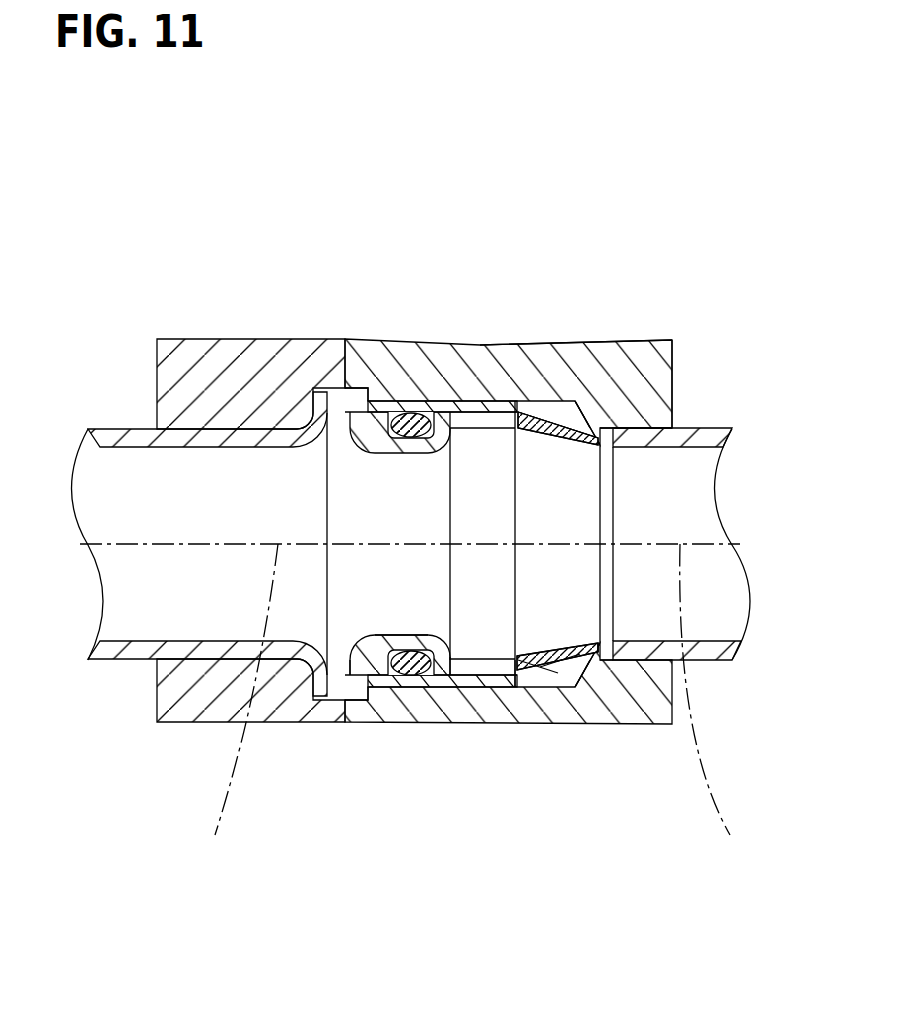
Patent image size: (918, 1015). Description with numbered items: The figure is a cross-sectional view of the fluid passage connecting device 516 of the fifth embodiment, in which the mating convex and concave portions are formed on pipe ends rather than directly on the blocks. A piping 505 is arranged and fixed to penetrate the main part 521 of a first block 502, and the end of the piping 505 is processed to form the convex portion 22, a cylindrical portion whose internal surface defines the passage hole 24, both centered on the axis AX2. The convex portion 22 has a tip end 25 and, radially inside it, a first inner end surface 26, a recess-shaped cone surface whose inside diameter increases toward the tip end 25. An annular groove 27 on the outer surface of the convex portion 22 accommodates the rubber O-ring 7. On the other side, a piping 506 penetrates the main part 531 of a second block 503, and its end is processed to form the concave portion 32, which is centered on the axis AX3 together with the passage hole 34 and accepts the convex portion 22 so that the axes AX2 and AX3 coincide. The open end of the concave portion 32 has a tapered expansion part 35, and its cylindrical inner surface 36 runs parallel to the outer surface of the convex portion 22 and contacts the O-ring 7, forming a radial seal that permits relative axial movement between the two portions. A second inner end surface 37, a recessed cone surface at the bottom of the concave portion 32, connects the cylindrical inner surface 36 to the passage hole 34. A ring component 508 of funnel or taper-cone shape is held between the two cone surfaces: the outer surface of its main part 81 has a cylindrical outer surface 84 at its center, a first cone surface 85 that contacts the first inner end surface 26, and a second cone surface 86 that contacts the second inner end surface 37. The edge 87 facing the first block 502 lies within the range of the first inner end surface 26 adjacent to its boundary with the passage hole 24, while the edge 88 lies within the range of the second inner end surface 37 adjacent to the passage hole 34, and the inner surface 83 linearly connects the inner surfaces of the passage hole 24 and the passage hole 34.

The first block 502 is at (243, 462).
The main part 521 is at (222, 362).
The convex portion 22 is at (432, 405).
The second block 503 is at (490, 377).
The main part 531 is at (532, 380).
The concave portion 32 is at (560, 398).
The fluid passage connecting device 516 is at (715, 259).
The annular groove 27 is at (367, 388).
The passage hole 24 is at (400, 402).
The first inner end surface 26 is at (455, 406).
The tip end 25 is at (480, 407).
The cylindrical inner surface 36 is at (537, 410).
The second inner end surface 37 is at (582, 405).
The passage hole 34 is at (640, 427).
The piping 505 is at (107, 658).
The piping 506 is at (712, 660).
The expansion part 35 is at (382, 690).
The O-ring 7 is at (413, 678).
The edge 87 is at (470, 670).
The first cone surface 85 is at (520, 668).
The cylindrical outer surface 84 is at (568, 670).
The second cone surface 86 is at (593, 668).
The inner surface 83 is at (600, 672).
The edge 88 is at (614, 672).
The axis AX2 is at (231, 705).
The ring component 508 is at (540, 668).
The main part 81 is at (574, 668).
The axis AX3 is at (713, 705).